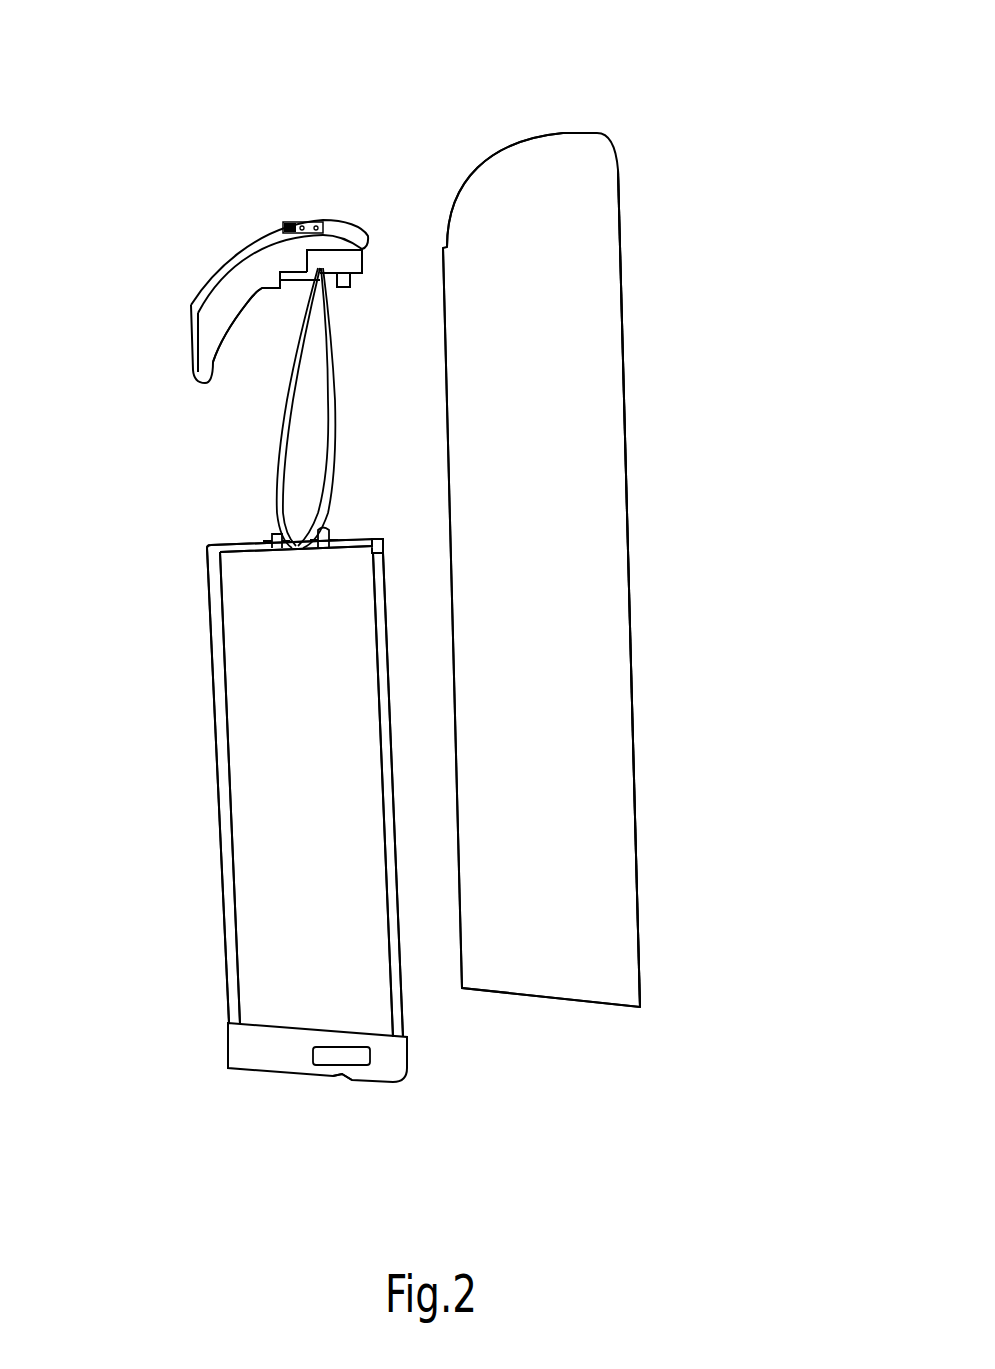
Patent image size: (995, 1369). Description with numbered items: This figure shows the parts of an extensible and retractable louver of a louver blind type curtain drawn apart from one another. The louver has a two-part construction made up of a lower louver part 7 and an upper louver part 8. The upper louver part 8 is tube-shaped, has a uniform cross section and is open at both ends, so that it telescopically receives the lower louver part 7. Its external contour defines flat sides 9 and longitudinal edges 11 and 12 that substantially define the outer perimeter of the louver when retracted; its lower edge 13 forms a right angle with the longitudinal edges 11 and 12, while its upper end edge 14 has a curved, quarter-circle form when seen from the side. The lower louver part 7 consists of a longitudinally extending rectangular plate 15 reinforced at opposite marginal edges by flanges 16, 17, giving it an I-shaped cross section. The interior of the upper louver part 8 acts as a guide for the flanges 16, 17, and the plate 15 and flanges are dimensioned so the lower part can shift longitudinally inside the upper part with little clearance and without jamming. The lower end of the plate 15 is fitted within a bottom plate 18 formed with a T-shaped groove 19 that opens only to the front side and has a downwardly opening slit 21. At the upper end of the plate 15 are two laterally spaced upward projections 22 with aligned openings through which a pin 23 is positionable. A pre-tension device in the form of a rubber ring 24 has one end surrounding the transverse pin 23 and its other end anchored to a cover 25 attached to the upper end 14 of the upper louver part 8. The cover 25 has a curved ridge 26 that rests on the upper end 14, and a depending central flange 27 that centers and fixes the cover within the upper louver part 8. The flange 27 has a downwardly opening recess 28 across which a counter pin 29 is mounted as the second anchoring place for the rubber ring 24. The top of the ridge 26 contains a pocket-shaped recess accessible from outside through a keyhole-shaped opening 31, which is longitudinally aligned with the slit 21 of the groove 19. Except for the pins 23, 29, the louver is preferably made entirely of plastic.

The lower louver part 7 is at (193, 863).
The upper louver part 8 is at (665, 590).
The flat sides 9 is at (555, 707).
The longitudinal edge 11 is at (447, 435).
The longitudinal edge 12 is at (625, 453).
The lower edge 13 is at (540, 997).
The upper end edge 14 is at (512, 145).
The rectangular plate 15 is at (327, 825).
The flange 16 is at (222, 728).
The flange 17 is at (385, 688).
The bottom plate 18 is at (268, 1075).
The T-shaped groove 19 is at (354, 1054).
The slit 21 is at (345, 1058).
The upward projections 22 is at (272, 533).
The pin 23 is at (263, 557).
The rubber ring 24 is at (243, 422).
The cover 25 is at (239, 220).
The ridge 26 is at (242, 256).
The central flange 27 is at (233, 308).
The recess 28 is at (322, 262).
The counter pin 29 is at (338, 289).
The keyhole-shaped opening 31 is at (308, 222).